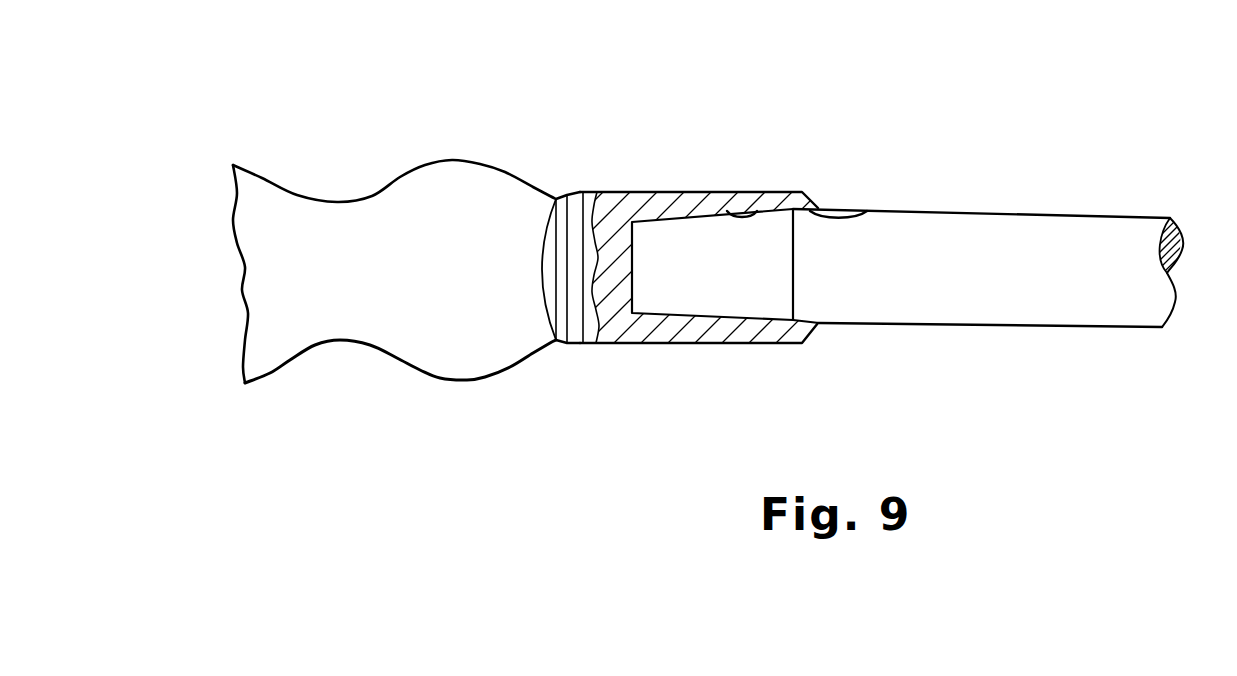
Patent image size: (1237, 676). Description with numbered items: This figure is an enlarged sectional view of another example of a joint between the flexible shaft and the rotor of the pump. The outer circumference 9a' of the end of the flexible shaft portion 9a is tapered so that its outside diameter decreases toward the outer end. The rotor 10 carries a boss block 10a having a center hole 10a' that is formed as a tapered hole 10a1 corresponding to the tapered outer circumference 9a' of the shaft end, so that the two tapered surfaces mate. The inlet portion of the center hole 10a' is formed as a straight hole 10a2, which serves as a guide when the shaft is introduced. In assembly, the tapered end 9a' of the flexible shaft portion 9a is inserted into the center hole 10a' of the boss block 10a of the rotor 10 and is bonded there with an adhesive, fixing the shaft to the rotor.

The rotor 10 is at (467, 170).
The boss block 10a is at (716, 215).
The center hole 10a' is at (829, 194).
The tapered hole 10a1 is at (777, 208).
The straight hole 10a2 is at (880, 211).
The flexible shaft portion 9a is at (1015, 238).
The outer circumference of the end of the flexible shaft portion 9a' is at (740, 309).